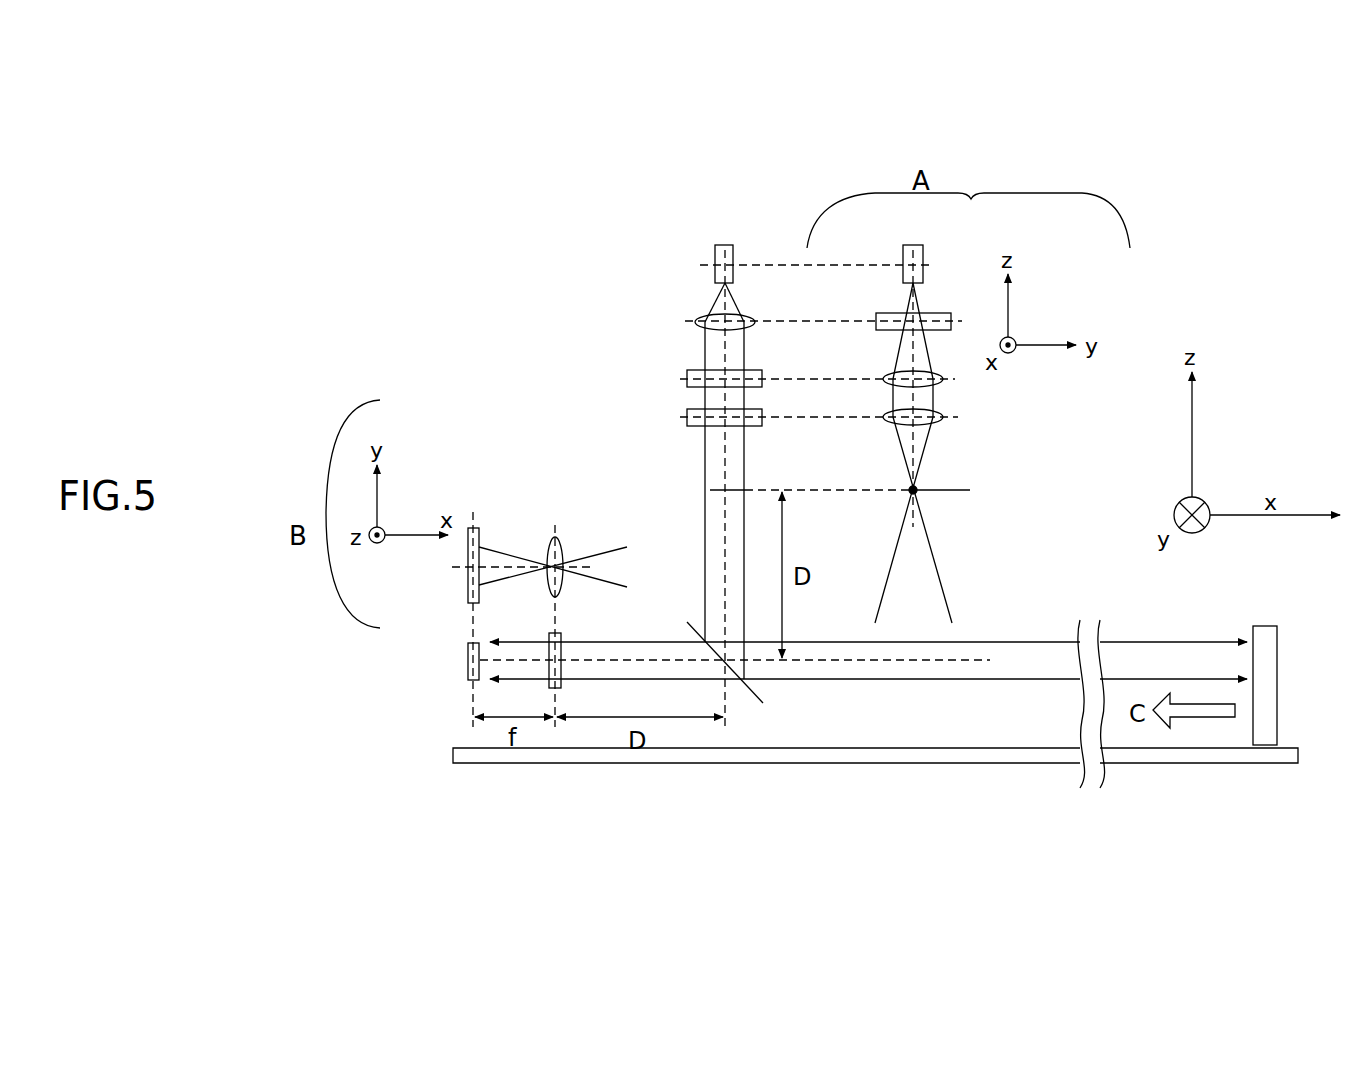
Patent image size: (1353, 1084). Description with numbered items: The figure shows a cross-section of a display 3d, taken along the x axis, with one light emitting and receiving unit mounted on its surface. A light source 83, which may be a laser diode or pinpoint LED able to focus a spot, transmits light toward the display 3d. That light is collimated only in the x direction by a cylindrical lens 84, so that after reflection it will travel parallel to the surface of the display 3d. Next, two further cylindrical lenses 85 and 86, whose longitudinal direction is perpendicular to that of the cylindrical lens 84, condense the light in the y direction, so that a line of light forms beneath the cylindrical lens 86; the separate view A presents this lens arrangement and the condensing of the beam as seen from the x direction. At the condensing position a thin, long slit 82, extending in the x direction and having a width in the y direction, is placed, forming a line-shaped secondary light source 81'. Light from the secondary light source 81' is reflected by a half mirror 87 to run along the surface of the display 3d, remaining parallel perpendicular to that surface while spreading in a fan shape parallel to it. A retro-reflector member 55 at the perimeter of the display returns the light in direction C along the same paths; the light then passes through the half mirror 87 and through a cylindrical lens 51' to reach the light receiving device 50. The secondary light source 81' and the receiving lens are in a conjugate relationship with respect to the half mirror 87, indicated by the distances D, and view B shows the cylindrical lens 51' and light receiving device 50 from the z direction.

The light source 83 is at (715, 248).
The cylindrical lens 84 is at (874, 320).
The cylindrical lens 85 is at (884, 370).
The cylindrical lens 86 is at (884, 426).
The secondary light source 81' is at (802, 469).
The slit 82 is at (966, 492).
The half mirror 87 is at (742, 674).
The light receiving device 50 is at (468, 604).
The cylindrical lens 51' is at (603, 612).
The retro-reflector member 55 is at (1265, 626).
The display 3d is at (886, 764).